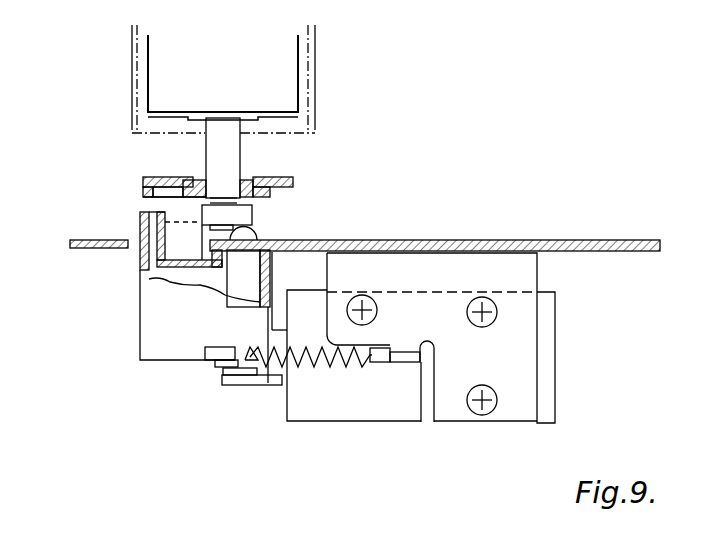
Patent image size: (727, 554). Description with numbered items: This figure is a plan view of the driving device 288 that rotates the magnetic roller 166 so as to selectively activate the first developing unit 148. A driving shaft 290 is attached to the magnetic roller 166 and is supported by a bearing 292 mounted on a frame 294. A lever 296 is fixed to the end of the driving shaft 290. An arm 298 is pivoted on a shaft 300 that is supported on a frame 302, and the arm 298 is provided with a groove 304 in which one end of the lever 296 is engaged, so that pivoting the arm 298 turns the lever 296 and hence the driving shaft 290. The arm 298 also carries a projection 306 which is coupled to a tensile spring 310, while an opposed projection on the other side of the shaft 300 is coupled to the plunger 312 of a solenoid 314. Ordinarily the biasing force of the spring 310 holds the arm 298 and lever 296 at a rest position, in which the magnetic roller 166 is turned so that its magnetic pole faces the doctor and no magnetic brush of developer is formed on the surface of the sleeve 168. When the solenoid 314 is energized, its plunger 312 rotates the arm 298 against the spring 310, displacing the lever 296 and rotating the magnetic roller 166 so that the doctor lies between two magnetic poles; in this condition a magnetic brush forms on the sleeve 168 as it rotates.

The first developing unit 148 is at (318, 44).
The sleeve 168 is at (130, 52).
The magnetic roller 166 is at (300, 96).
The driving shaft 290 is at (243, 166).
The lever 296 is at (186, 168).
The frame 294 is at (143, 189).
The bearing 292 is at (253, 210).
The groove 304 is at (177, 246).
The shaft 300 is at (252, 262).
The frame 302 is at (595, 256).
The arm 298 is at (150, 333).
The projection 306 is at (215, 353).
The driving device 288 is at (283, 386).
The plunger 312 is at (276, 373).
The tensile spring 310 is at (328, 368).
The solenoid 314 is at (418, 410).